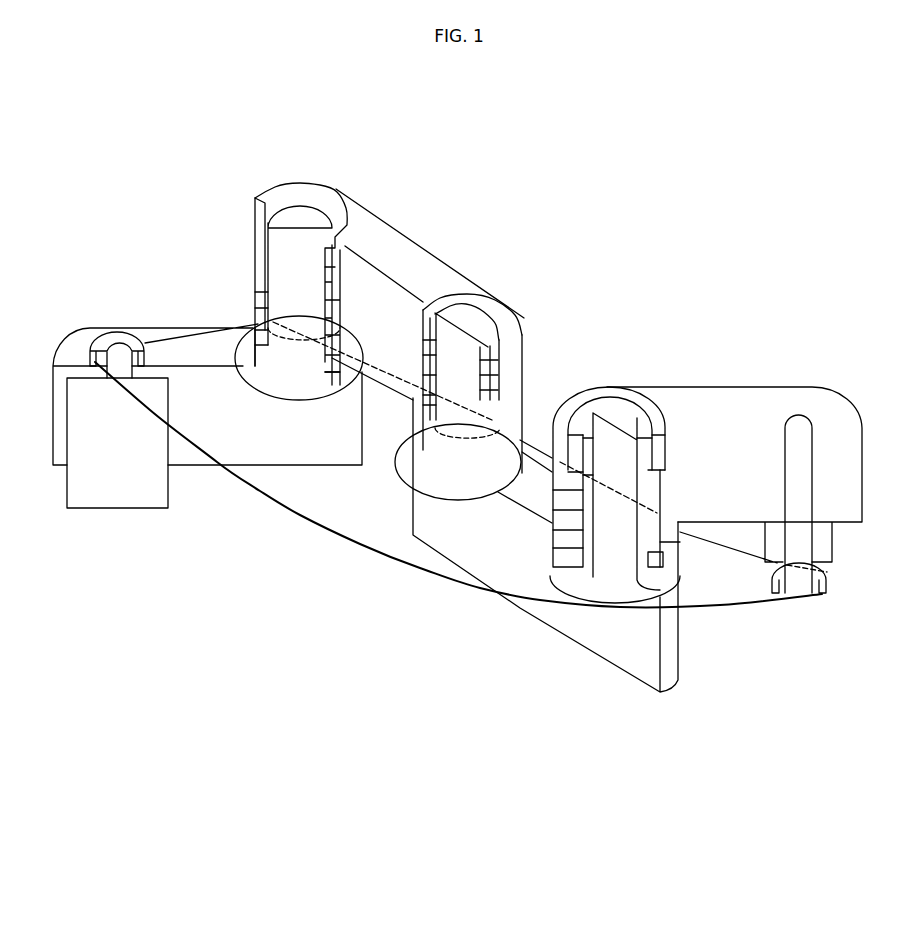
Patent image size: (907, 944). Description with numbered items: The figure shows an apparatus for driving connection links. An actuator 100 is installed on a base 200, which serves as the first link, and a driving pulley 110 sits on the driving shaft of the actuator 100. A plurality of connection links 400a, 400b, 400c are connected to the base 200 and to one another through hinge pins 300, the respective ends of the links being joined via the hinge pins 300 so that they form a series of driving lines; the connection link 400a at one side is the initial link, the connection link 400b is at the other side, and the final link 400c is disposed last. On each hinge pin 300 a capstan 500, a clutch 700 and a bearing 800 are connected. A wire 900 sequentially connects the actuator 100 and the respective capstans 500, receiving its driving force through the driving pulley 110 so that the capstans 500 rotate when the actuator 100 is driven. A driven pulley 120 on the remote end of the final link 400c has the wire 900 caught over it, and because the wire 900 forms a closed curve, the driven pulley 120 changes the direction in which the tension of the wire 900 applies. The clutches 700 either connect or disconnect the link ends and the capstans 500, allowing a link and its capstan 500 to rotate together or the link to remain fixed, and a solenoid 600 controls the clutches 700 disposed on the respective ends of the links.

The actuator 100 is at (118, 487).
The driving pulley 110 is at (105, 337).
The driven pulley 120 is at (827, 570).
The base 200 is at (228, 443).
The hinge pin 300 is at (303, 214).
The connection link 400a is at (418, 270).
The connection link 400b is at (527, 587).
The final link 400c is at (735, 397).
The capstan 500 is at (343, 377).
The solenoid 600 is at (340, 350).
The clutch 700 is at (267, 300).
The bearing 800 is at (338, 217).
The wire 900 is at (397, 567).